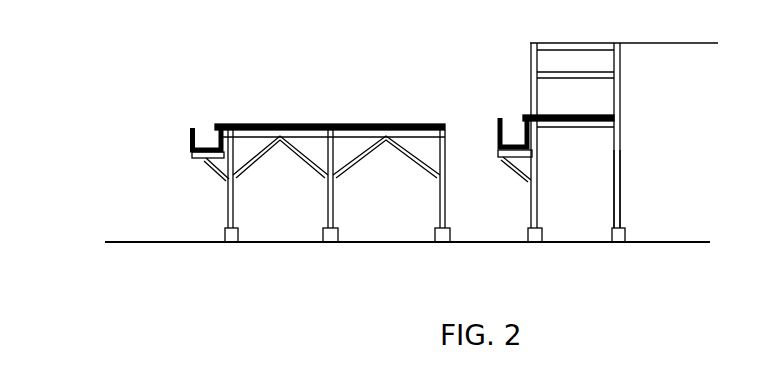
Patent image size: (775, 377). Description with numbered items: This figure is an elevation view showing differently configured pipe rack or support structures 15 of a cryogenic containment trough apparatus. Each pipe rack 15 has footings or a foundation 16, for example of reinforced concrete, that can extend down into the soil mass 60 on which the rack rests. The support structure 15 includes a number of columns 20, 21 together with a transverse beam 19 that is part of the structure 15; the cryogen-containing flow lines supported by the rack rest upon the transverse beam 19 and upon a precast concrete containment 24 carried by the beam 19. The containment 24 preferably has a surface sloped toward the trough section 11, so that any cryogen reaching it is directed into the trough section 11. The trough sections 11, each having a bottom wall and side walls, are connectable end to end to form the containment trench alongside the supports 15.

The trough section 11 is at (190, 132).
The pipe rack or support structure 15 is at (235, 197).
The footings or foundation 16 is at (233, 244).
The transverse beam 19 is at (308, 140).
The column 20 is at (530, 193).
The column 21 is at (622, 187).
The precast concrete containment 24 is at (305, 124).
The soil mass 60 is at (145, 230).